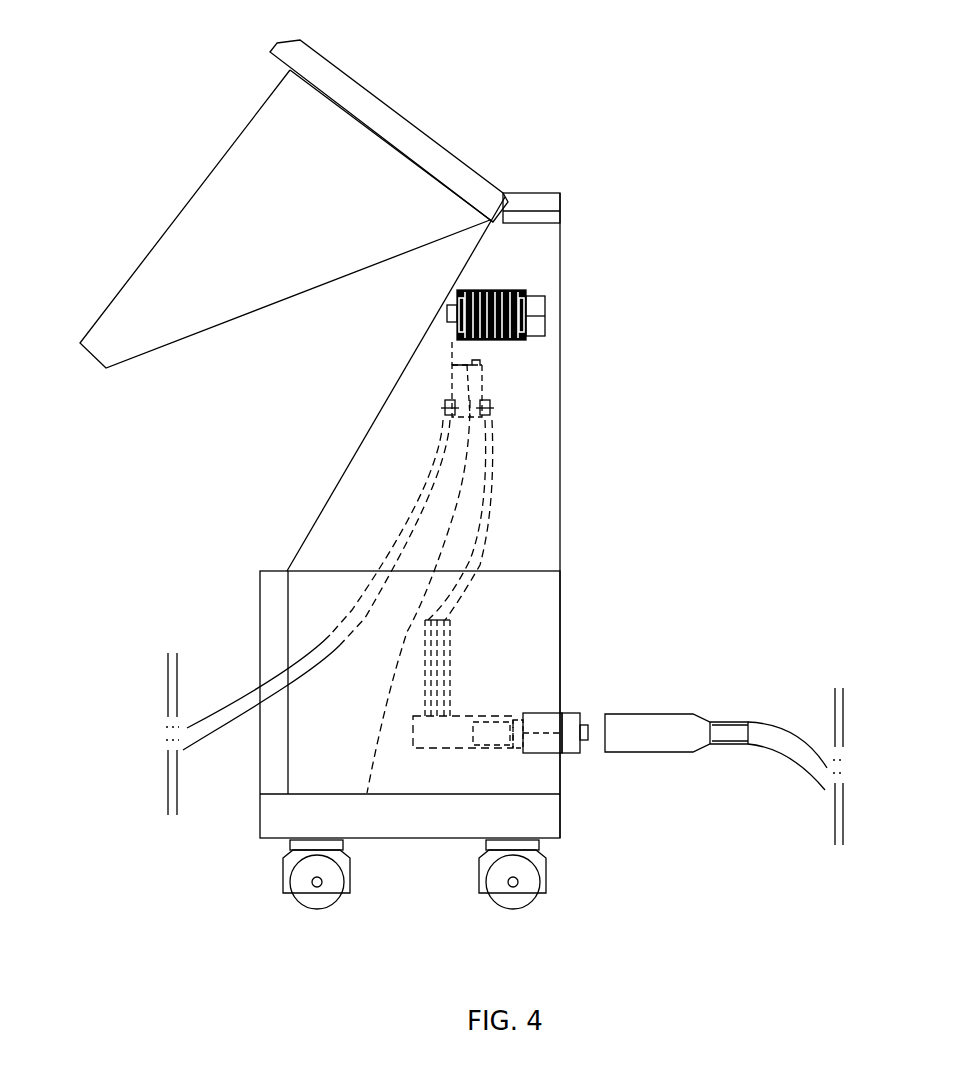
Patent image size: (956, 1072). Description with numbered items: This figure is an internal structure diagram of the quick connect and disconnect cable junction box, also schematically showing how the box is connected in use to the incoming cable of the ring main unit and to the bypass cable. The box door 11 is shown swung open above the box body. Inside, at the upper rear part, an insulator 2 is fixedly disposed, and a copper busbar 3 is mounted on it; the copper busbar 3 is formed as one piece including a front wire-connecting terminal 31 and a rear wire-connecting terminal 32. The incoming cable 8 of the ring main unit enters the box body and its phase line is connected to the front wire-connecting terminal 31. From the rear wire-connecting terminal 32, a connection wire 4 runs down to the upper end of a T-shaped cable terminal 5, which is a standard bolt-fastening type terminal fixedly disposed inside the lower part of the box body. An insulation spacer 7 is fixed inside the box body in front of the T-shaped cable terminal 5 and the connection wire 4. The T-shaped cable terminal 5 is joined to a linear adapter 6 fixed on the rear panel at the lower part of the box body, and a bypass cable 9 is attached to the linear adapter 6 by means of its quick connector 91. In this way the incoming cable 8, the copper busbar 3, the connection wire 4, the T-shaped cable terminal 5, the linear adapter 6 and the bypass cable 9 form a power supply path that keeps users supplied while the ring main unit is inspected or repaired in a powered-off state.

The box door 11 is at (248, 188).
The insulator 2 is at (528, 295).
The copper busbar 3 is at (451, 402).
The front wire-connecting terminal 31 is at (387, 374).
The rear wire-connecting terminal 32 is at (485, 402).
The insulation spacer 7 is at (465, 483).
The connection wire 4 is at (483, 537).
The incoming cable of ring main unit 8 is at (238, 700).
The T-shaped cable terminal 5 is at (440, 723).
The linear adapter 6 is at (548, 728).
The quick connector 91 is at (662, 742).
The bypass cable 9 is at (785, 740).